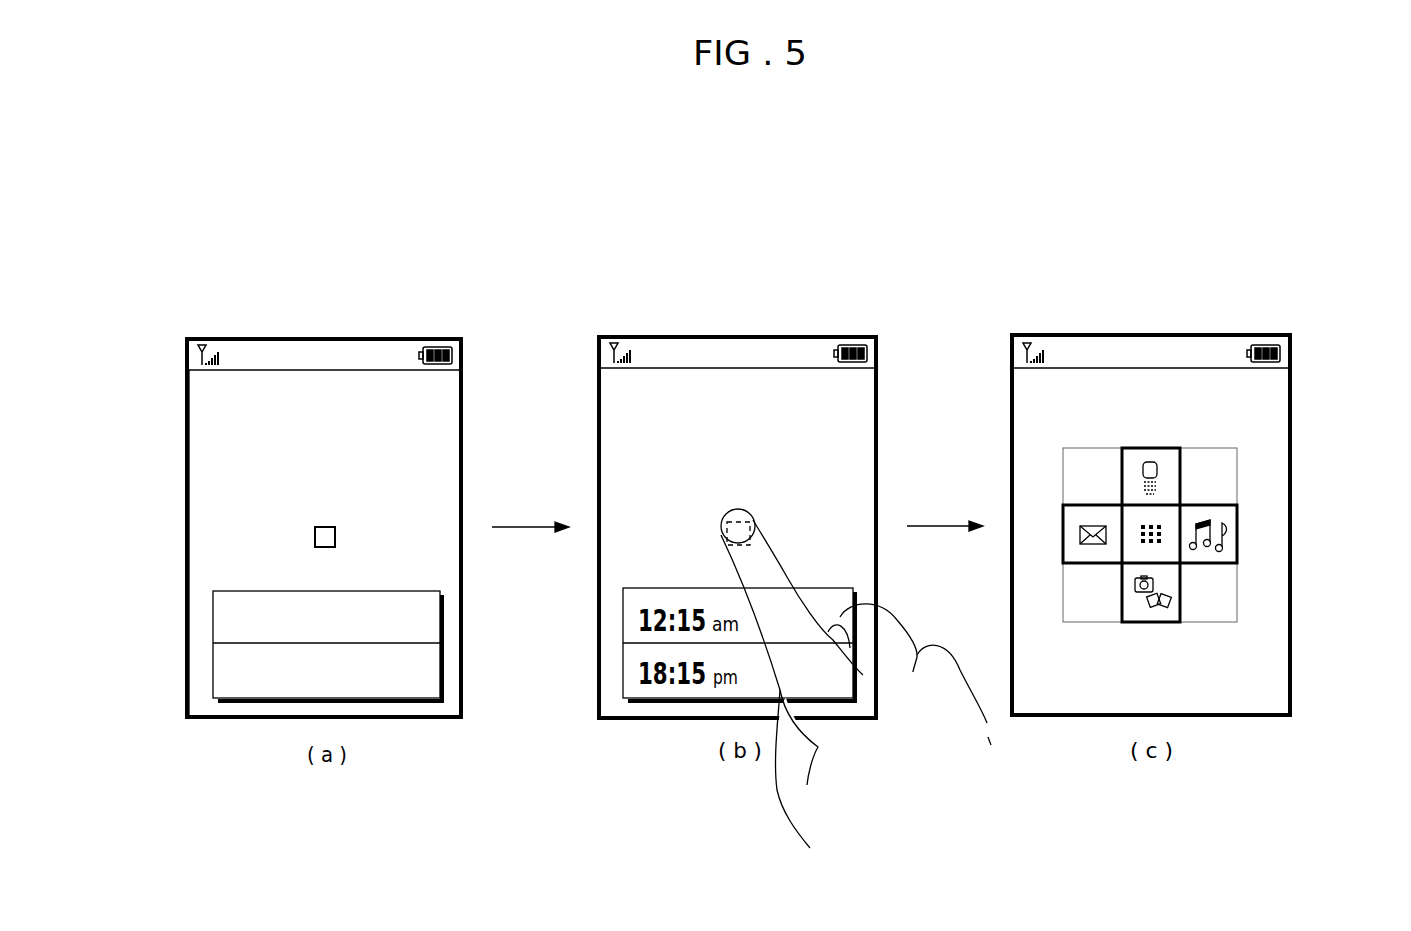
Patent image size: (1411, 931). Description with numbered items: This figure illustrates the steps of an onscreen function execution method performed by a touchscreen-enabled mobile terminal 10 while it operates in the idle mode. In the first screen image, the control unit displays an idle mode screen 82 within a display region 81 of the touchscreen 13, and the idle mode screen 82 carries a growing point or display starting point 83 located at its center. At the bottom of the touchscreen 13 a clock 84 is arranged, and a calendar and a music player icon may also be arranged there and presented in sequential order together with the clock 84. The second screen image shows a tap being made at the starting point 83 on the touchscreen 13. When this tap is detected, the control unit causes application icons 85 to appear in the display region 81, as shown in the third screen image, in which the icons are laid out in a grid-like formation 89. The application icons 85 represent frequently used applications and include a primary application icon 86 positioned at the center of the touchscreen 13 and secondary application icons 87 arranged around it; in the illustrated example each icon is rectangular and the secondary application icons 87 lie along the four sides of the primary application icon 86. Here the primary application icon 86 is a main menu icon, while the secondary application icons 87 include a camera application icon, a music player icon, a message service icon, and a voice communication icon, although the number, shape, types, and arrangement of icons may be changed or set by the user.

The mobile terminal 10 is at (200, 280).
The touchscreen 13 is at (398, 326).
The display region 81 is at (215, 430).
The idle mode screen 82 is at (205, 505).
The starting point 83 is at (310, 535).
The clock 84 is at (444, 617).
The application icons 85 is at (1362, 522).
The primary application icon 86 is at (1151, 546).
The secondary application icons 87 is at (1226, 527).
The menu grid 89 is at (1030, 468).